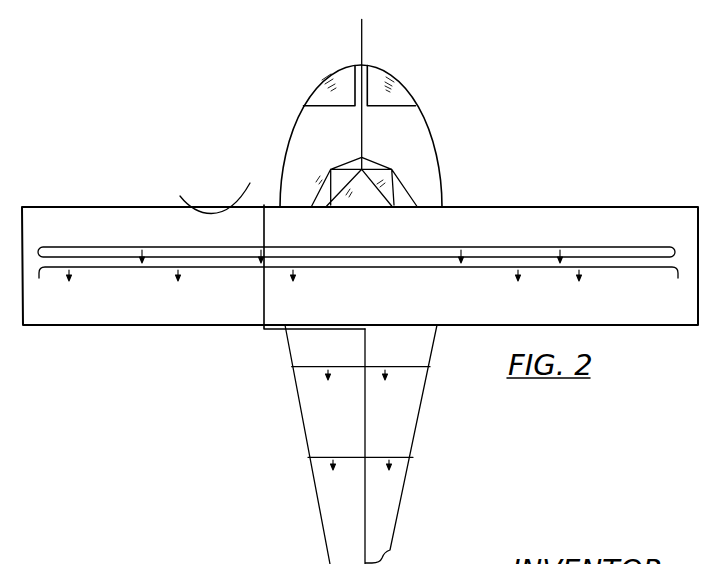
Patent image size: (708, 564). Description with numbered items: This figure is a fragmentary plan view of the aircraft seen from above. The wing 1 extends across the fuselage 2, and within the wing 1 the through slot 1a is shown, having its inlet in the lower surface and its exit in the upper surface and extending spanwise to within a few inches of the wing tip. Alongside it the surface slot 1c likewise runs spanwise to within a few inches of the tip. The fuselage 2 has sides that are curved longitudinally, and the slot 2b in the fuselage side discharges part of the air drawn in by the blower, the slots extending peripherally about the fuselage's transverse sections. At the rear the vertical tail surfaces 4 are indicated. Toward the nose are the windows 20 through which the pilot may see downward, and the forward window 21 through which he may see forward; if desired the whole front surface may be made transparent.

The wing 1 is at (532, 212).
The through slot 1a is at (633, 248).
The surface slot 1c is at (603, 267).
The fuselage 2 is at (423, 135).
The slot in the fuselage side 2b is at (410, 370).
The vertical tail surfaces 4 is at (362, 20).
The windows 20 is at (327, 90).
The forward window 21 is at (380, 183).